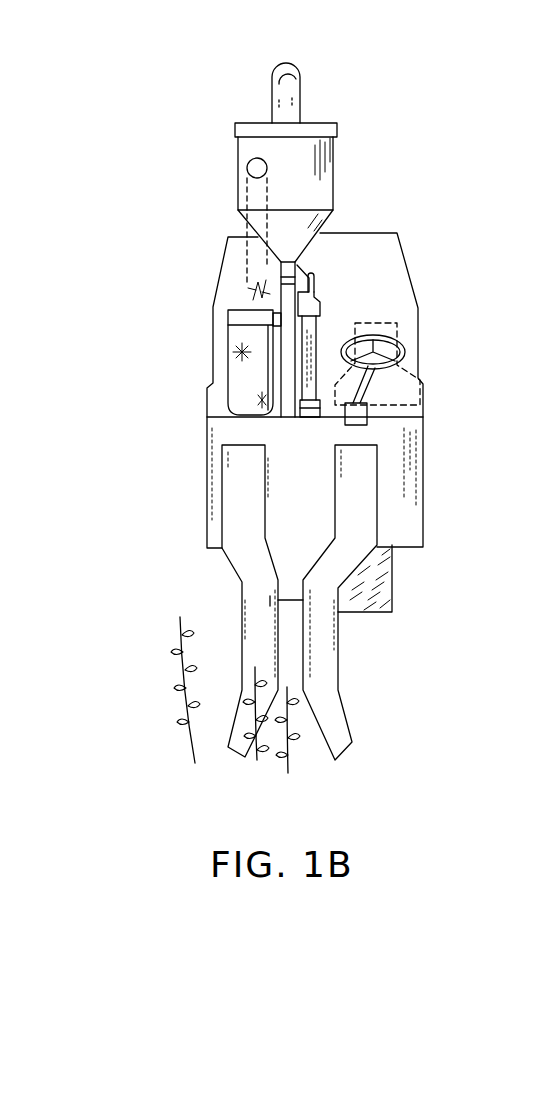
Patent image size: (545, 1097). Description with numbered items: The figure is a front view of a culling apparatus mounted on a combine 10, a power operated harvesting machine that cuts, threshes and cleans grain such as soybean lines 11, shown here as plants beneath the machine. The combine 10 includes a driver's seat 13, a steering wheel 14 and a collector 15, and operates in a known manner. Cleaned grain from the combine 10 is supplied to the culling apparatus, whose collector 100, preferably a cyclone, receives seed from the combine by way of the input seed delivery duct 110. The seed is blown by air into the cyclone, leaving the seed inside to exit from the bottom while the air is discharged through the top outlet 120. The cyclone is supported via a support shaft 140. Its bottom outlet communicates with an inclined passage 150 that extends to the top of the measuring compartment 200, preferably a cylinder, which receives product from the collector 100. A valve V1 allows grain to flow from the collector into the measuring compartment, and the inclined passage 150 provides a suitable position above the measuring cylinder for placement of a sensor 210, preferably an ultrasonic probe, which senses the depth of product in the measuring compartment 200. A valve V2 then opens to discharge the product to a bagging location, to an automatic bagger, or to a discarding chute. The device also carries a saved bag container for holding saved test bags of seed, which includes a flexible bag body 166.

The combine 10 is at (188, 460).
The collector 100 is at (241, 114).
The top outlet 120 is at (289, 77).
The input seed delivery duct 110 is at (258, 256).
The valve V1 is at (265, 270).
The inclined passage 150 is at (302, 302).
The support shaft 140 is at (287, 340).
The flexible bag body 166 is at (242, 388).
The sensor 210 is at (330, 274).
The measuring compartment 200 is at (313, 350).
The valve V2 is at (326, 425).
The steering wheel 14 is at (397, 335).
The driver's seat 13 is at (425, 383).
The collector 15 is at (250, 570).
The soybean lines 11 is at (256, 783).